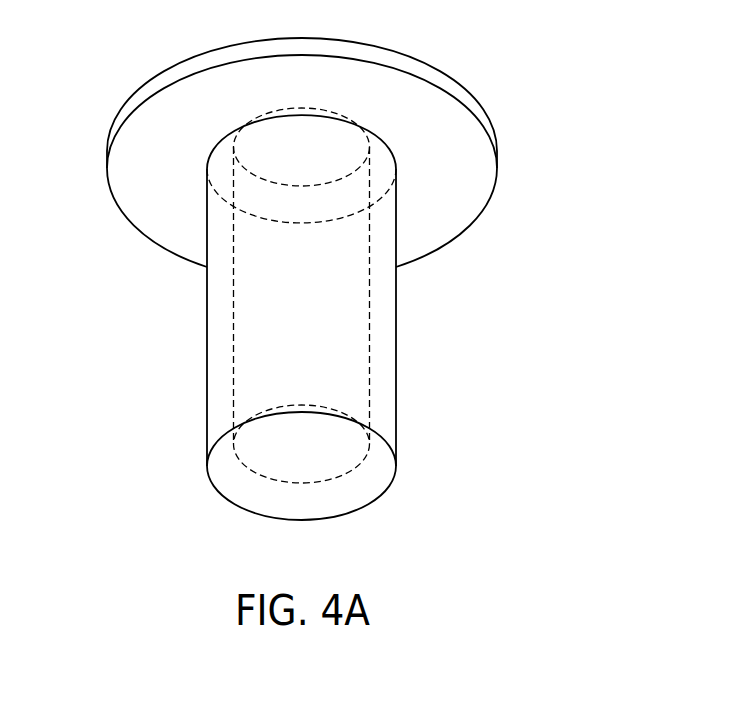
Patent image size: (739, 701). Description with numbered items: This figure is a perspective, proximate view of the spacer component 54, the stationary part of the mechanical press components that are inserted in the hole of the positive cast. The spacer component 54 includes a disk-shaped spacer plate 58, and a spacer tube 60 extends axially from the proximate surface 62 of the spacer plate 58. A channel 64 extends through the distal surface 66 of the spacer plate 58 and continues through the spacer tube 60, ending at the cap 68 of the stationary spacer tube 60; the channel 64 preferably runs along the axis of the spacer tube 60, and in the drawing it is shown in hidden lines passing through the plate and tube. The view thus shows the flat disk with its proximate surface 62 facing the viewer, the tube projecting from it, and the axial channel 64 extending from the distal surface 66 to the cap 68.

The spacer component 54 is at (336, 288).
The spacer plate 58 is at (182, 241).
The spacer tube 60 is at (387, 386).
The proximate surface 62 is at (125, 194).
The channel 64 is at (233, 312).
The distal surface 66 is at (172, 66).
The cap 68 is at (355, 500).